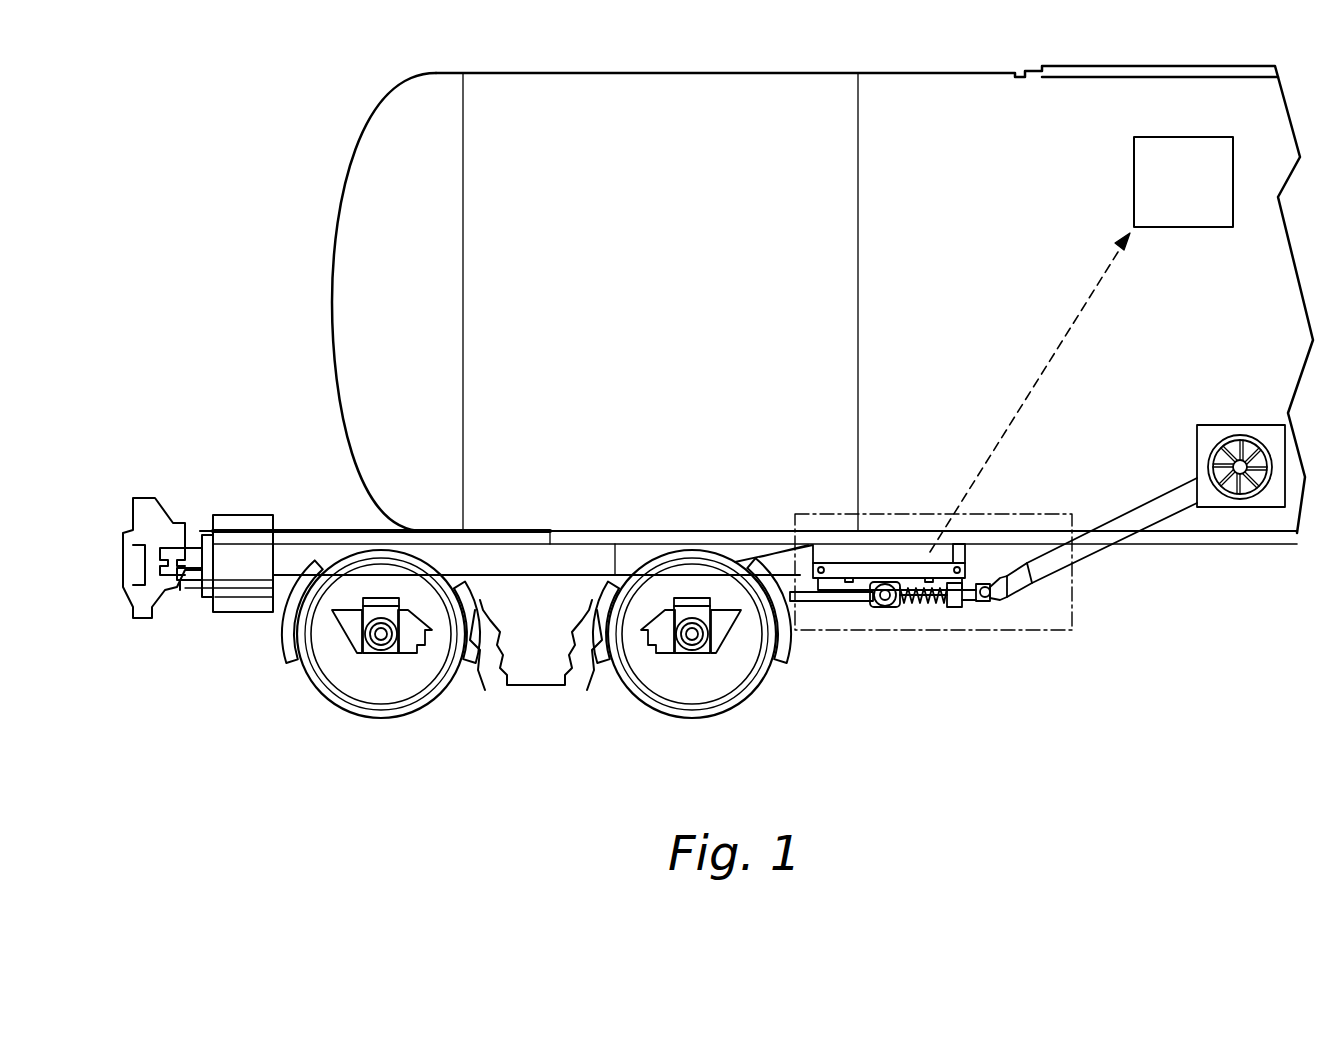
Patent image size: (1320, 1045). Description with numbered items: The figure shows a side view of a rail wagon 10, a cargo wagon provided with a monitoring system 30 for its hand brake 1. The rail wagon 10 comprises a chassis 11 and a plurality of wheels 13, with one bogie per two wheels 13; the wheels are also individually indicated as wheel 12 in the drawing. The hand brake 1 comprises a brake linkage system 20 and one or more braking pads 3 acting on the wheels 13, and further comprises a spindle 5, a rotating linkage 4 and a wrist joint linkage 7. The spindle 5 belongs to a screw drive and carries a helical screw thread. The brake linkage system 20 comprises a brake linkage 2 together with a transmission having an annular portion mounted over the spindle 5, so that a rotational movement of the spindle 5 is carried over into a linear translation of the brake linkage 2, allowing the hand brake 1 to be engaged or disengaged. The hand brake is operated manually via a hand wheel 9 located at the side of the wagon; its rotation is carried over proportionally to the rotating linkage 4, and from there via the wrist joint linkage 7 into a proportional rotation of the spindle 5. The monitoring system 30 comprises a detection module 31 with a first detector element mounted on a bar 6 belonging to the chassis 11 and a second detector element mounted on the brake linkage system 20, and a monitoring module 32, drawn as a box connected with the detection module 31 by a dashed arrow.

The hand brake 1 is at (1048, 645).
The brake linkage 2 is at (848, 600).
The braking pads 3 is at (290, 650).
The rotating linkage 4 is at (1124, 523).
The spindle 5 is at (923, 607).
The bar 6 is at (896, 575).
The wrist joint linkage 7 is at (983, 603).
The hand wheel 9 is at (1232, 442).
The rail wagon 10 is at (188, 137).
The chassis 11 is at (513, 531).
The wheel 12 is at (352, 630).
The wheels 13 is at (378, 680).
The brake linkage system 20 is at (844, 715).
The monitoring system 30 is at (894, 715).
The detection module 31 is at (942, 715).
The monitoring module 32 is at (1199, 193).